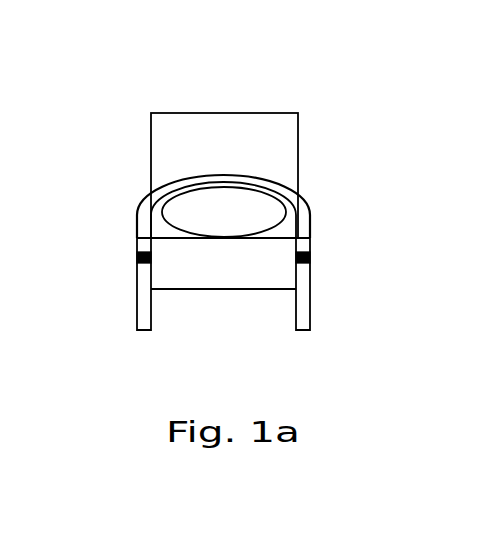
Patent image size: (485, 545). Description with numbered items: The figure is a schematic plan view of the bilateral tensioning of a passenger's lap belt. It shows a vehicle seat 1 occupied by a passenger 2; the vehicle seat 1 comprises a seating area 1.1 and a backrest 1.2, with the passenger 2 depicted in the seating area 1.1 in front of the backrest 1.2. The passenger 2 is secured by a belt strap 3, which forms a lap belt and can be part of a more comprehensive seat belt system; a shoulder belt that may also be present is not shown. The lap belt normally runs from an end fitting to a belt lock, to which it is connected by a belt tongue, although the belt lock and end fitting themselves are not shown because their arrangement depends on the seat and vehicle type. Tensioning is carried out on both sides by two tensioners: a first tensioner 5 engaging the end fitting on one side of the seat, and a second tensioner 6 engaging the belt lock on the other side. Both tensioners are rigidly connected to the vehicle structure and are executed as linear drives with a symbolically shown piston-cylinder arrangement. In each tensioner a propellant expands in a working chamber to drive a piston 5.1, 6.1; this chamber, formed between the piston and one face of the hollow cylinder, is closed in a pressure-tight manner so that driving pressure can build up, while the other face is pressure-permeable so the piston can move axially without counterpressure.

The vehicle seat 1 is at (262, 76).
The seating area 1.1 is at (236, 159).
The backrest 1.2 is at (218, 290).
The passenger 2 is at (223, 230).
The belt strap 3 is at (310, 212).
The first tensioner 5 is at (137, 318).
The piston 5.1 is at (137, 262).
The second tensioner 6 is at (310, 318).
The piston 6.1 is at (310, 260).